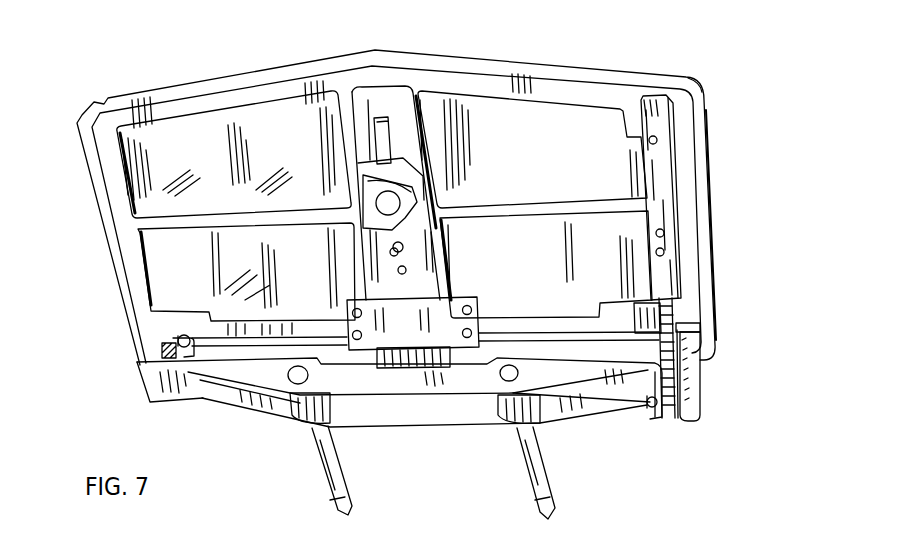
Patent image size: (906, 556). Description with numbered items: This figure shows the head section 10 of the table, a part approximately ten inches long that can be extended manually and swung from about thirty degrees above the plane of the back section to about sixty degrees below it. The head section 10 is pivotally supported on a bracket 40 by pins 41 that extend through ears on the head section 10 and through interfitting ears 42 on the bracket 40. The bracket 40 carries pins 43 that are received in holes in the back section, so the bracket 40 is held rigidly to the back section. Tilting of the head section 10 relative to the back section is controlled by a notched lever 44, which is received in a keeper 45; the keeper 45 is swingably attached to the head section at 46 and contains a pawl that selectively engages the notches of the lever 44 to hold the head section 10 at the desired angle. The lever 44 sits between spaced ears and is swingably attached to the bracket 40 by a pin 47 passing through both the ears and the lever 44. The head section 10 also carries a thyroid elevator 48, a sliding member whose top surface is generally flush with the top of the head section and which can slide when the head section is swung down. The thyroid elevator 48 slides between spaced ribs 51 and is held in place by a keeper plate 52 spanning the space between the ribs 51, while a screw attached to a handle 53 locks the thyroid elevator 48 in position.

The head section 10 is at (113, 274).
The bracket 40 is at (252, 405).
The pins 41 is at (186, 334).
The interfitting ears 42 is at (160, 349).
The pins 43 is at (338, 500).
The notched lever 44 is at (668, 318).
The keeper 45 is at (718, 259).
The keeper attachment point 46 is at (660, 148).
The pin 47 is at (641, 412).
The thyroid elevator 48 is at (388, 281).
The spaced ribs 51 is at (362, 172).
The keeper plate 52 is at (437, 320).
The handle 53 is at (375, 195).